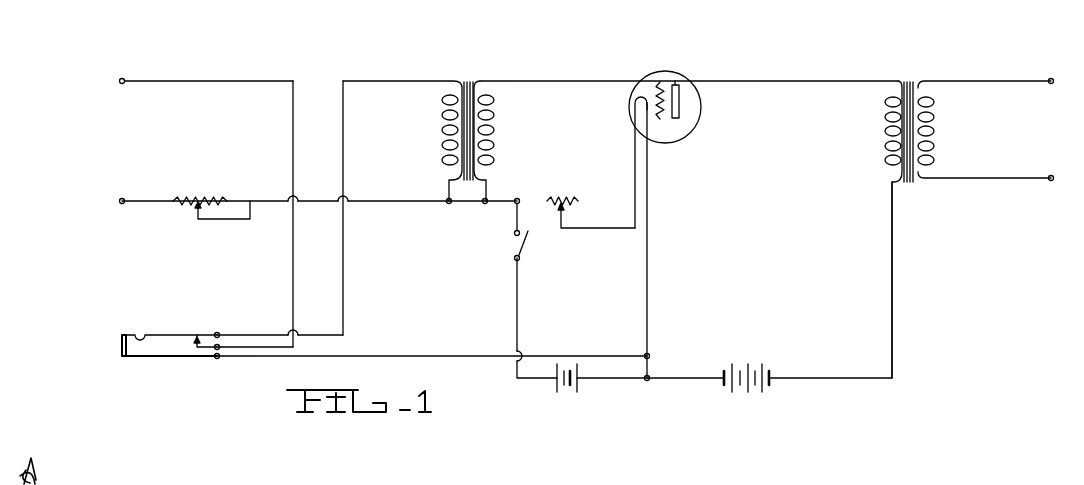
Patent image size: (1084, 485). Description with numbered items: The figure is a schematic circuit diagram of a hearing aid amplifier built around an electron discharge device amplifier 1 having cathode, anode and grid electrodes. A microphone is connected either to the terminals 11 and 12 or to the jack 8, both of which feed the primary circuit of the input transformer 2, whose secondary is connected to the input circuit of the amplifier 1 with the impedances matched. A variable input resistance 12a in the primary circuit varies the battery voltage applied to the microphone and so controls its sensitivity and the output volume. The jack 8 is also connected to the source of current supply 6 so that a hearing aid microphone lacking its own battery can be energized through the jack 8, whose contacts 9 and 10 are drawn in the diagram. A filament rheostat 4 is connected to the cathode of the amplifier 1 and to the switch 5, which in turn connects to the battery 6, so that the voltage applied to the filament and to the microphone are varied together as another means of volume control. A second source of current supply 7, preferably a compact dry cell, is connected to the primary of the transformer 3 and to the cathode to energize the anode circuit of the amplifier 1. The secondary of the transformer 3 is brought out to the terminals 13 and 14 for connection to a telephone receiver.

The electron discharge device amplifier 1 is at (700, 137).
The input transformer 2 is at (473, 74).
The transformer 3 is at (910, 76).
The filament rheostat 4 is at (566, 184).
The switch 5 is at (531, 248).
The battery 6 is at (581, 388).
The source of current supply 7 is at (744, 357).
The jack 8 is at (128, 329).
The key contact 9 is at (172, 334).
The key back contact 10 is at (279, 335).
The terminal 11 is at (123, 84).
The terminal 12 is at (126, 197).
The variable input resistance 12a is at (196, 206).
The terminal 13 is at (1049, 88).
The terminal 14 is at (1042, 172).